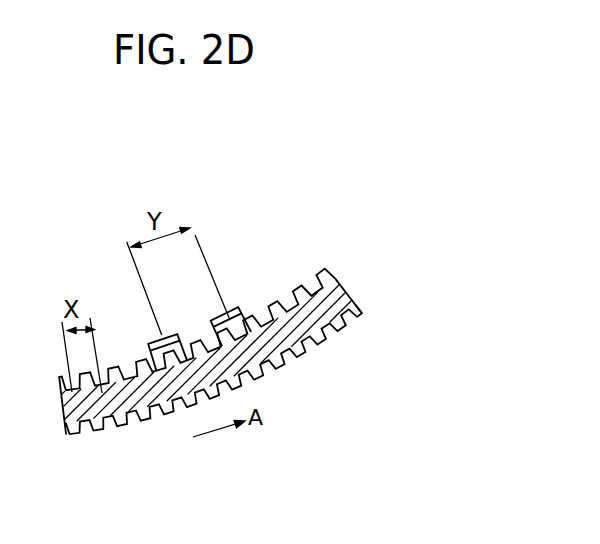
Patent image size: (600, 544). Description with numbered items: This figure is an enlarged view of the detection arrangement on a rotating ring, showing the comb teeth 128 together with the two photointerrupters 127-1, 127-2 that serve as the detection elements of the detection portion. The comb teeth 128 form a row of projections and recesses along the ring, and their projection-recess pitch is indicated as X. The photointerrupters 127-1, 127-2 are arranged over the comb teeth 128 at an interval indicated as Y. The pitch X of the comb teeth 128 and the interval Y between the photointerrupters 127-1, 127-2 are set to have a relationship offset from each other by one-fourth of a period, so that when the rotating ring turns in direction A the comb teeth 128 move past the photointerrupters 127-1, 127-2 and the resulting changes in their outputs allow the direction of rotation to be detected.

The comb teeth 128 is at (268, 303).
The photointerrupter 127-1 is at (158, 356).
The photointerrupter 127-2 is at (233, 326).